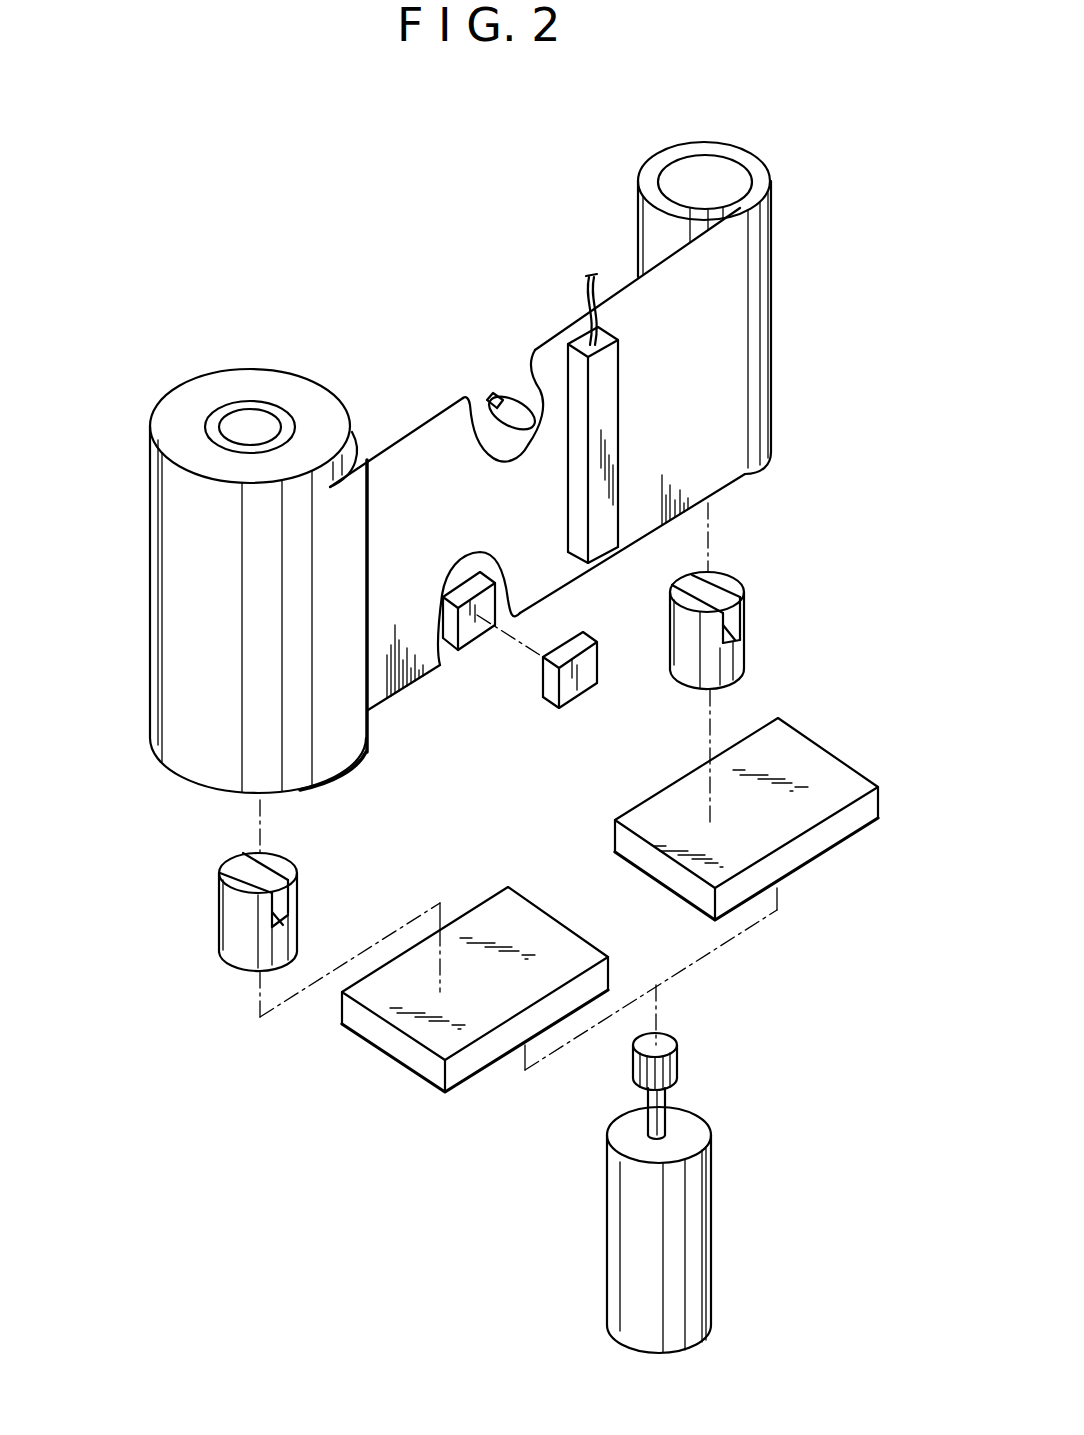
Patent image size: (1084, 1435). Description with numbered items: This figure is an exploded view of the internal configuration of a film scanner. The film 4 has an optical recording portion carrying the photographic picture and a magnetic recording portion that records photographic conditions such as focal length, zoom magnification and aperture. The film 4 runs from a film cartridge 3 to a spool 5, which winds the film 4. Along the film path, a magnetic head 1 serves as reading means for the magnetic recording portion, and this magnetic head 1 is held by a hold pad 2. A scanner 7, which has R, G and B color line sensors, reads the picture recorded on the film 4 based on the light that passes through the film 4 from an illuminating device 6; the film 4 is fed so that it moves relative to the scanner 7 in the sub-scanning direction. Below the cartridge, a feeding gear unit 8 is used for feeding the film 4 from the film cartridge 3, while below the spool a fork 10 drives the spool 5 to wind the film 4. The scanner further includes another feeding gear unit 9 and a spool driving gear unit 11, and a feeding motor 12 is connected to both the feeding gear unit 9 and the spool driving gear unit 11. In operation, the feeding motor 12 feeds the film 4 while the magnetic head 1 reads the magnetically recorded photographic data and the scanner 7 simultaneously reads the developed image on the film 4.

The magnetic head 1 is at (598, 670).
The hold pad 2 is at (475, 617).
The film cartridge 3 is at (322, 386).
The film 4 is at (433, 400).
The spool 5 is at (766, 163).
The illuminating device 6 is at (513, 395).
The scanner 7 is at (622, 398).
The feeding gear unit 8 is at (217, 912).
The feeding gear unit 9 is at (475, 905).
The fork 10 is at (746, 655).
The spool driving gear unit 11 is at (645, 800).
The feeding motor 12 is at (607, 1235).